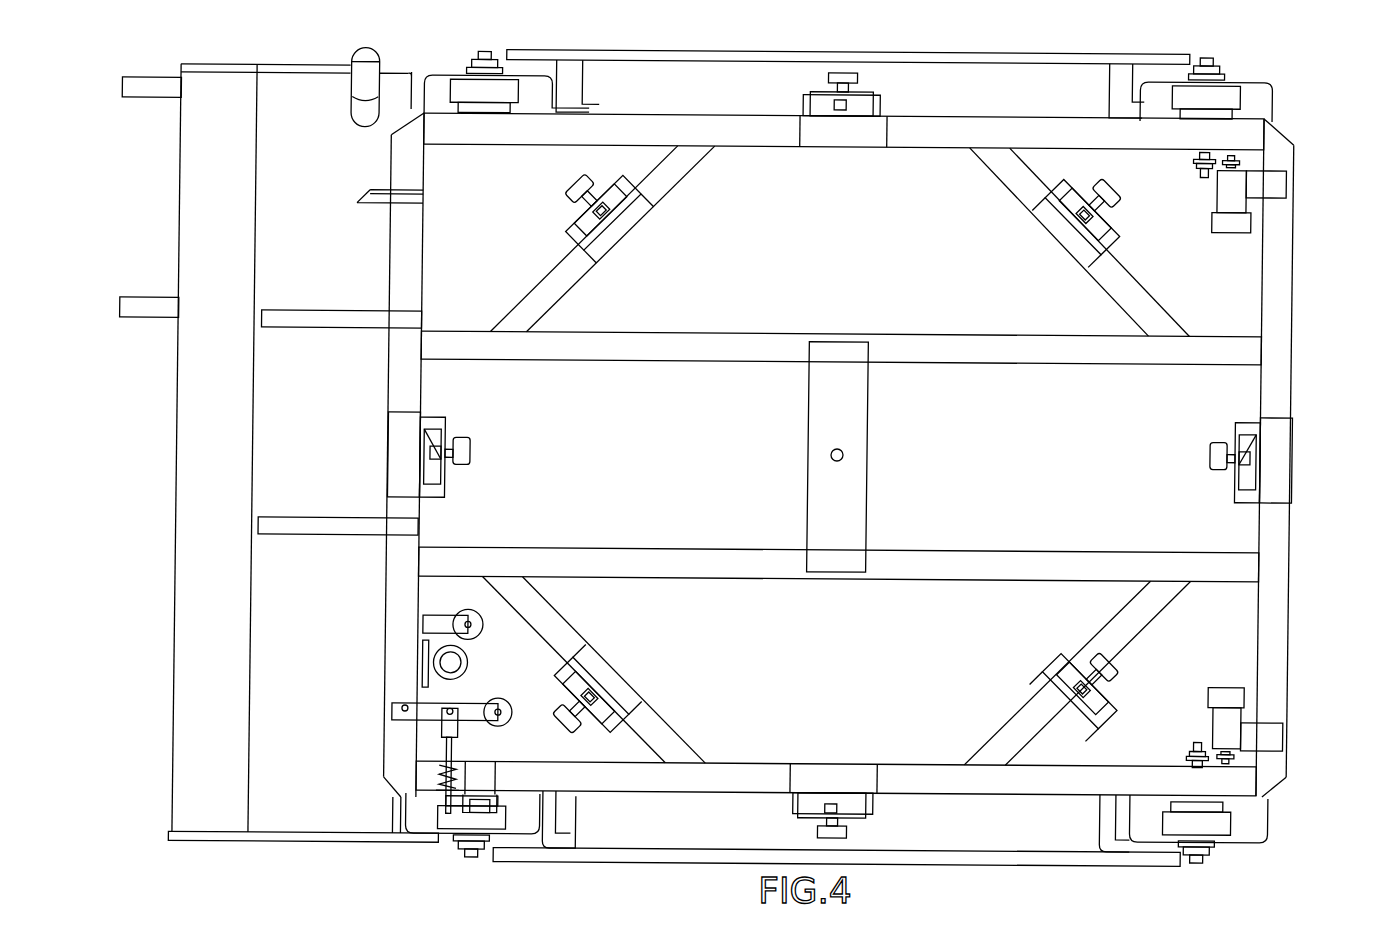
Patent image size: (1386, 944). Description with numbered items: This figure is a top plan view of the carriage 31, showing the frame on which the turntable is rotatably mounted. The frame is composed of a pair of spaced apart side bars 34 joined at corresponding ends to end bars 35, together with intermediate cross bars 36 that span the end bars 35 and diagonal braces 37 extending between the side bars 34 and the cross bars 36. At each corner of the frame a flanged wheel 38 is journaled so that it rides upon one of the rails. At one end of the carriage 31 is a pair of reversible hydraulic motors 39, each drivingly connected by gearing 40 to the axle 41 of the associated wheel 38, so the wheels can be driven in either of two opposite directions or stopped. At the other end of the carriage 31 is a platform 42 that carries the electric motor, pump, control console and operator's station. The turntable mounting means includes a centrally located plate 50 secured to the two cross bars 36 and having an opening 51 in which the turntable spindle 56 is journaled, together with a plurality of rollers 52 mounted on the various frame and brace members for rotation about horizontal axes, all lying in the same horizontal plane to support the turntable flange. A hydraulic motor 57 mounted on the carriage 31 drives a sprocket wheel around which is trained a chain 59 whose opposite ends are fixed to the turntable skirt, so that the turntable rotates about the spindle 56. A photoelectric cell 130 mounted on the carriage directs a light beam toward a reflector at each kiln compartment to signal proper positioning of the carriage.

The carriage 31 is at (1302, 386).
The side bars 34 is at (931, 148).
The end bars 35 is at (416, 298).
The intermediate cross bars 36 is at (739, 578).
The diagonal braces 37 is at (570, 281).
The flanged wheel 38 is at (457, 93).
The reversible hydraulic motors 39 is at (1226, 224).
The gearing 40 is at (1196, 168).
The axle 41 is at (1184, 155).
The platform 42 is at (290, 89).
The centrally located plate 50 is at (858, 527).
The opening 51 is at (842, 460).
The rollers 52 is at (564, 203).
The spindle 56 is at (470, 663).
The hydraulic motor 57 is at (465, 665).
The chain 59 is at (445, 621).
The photoelectric cell 130 is at (346, 95).